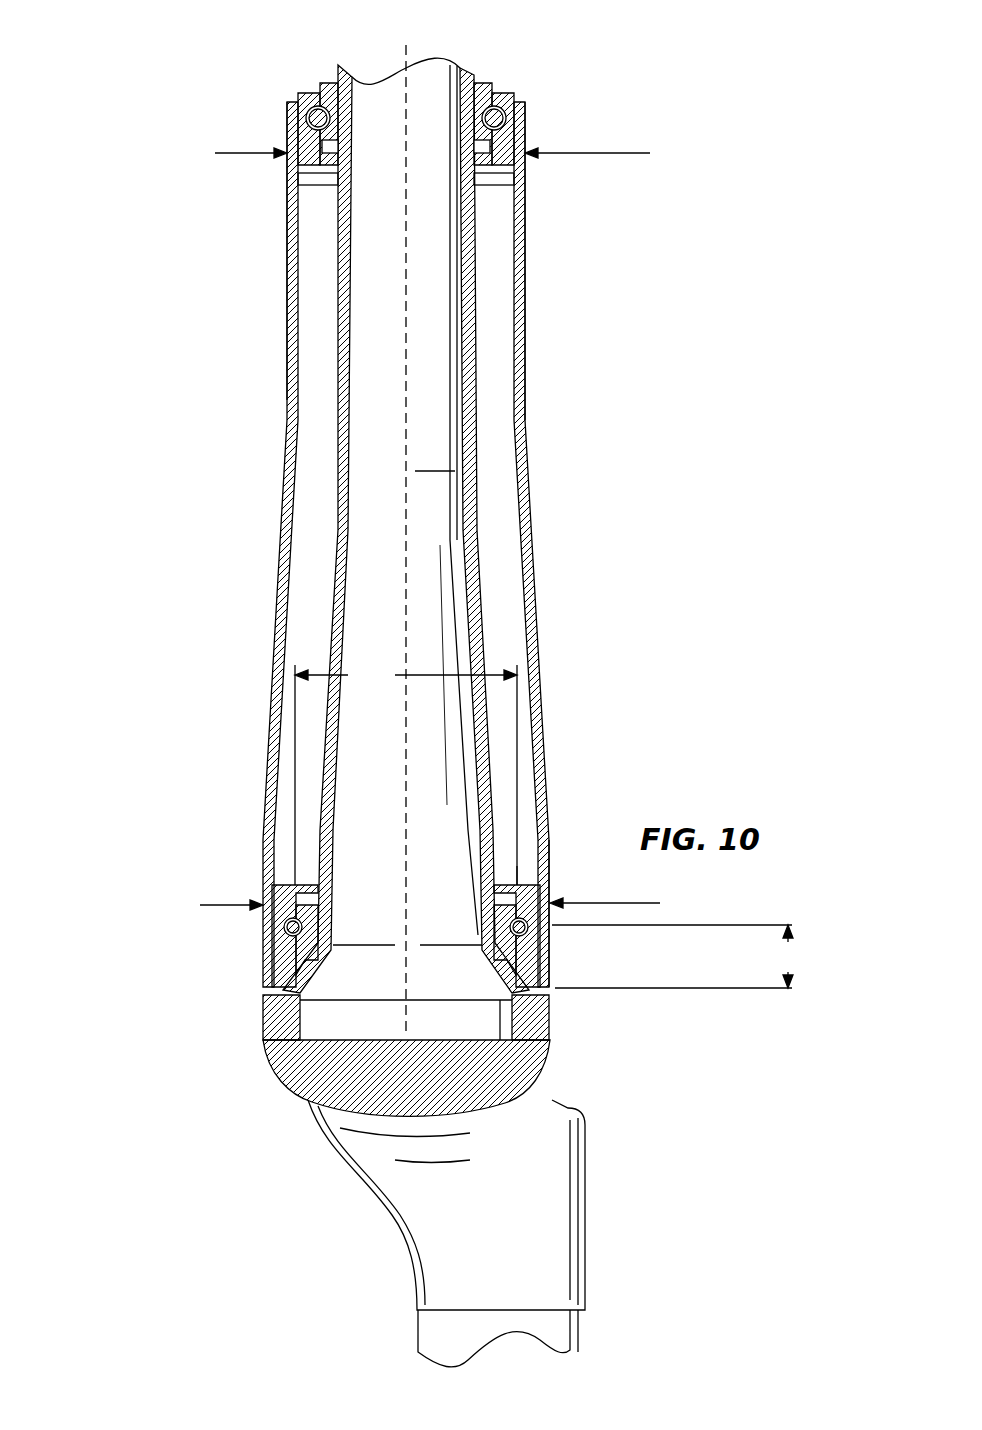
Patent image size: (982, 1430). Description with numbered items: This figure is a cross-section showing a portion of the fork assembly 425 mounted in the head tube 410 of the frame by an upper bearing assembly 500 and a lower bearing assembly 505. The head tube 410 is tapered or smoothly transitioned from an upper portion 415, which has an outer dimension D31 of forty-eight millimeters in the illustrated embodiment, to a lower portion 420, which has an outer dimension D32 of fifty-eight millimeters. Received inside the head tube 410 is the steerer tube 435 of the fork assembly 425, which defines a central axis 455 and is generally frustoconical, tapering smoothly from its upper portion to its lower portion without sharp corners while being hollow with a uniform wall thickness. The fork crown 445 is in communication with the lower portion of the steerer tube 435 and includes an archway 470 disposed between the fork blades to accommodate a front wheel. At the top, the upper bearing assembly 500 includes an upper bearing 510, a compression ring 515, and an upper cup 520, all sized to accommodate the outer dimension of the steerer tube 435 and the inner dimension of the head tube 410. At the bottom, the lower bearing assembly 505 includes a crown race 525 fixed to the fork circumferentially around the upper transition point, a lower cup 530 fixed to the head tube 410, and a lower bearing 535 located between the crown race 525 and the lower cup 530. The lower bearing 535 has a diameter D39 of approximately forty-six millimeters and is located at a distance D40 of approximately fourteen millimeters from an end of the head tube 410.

The upper bearing assembly 500 is at (288, 64).
The compression ring 515 is at (480, 82).
The upper bearing 510 is at (498, 92).
The outer dimension of upper portion D31 is at (460, 155).
The upper cup 520 is at (500, 180).
The upper portion 415 is at (526, 262).
The central axis 455 is at (406, 240).
The steerer tube 435 is at (475, 342).
The head tube 410 is at (528, 471).
The diameter of lower bearing D39 is at (406, 774).
The lower bearing assembly 505 is at (517, 873).
The lower portion 420 is at (550, 865).
The outer dimension of lower portion D32 is at (457, 904).
The crown race 525 is at (550, 955).
The distance from end of head tube D40 is at (681, 956).
The lower cup 530 is at (287, 885).
The lower bearing 535 is at (287, 947).
The fork crown 445 is at (263, 1012).
The fork assembly 425 is at (208, 1027).
The archway 470 is at (425, 1113).